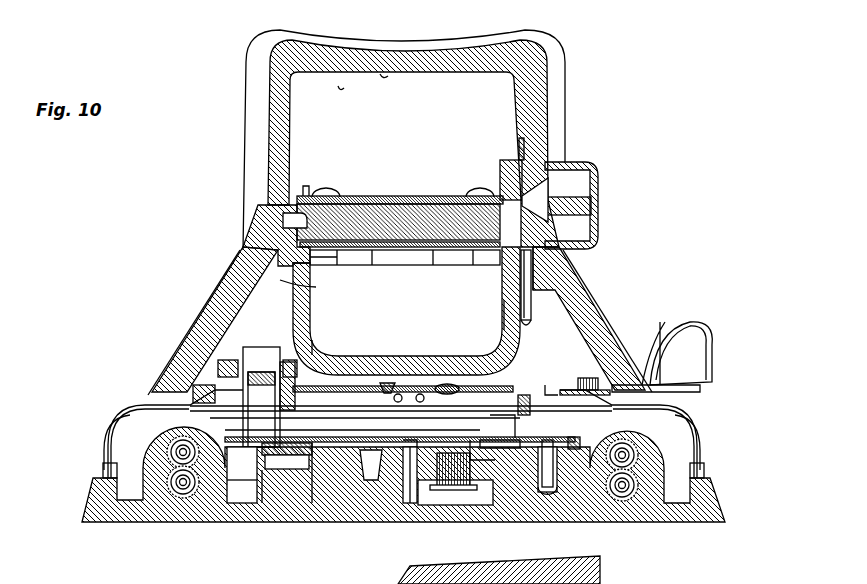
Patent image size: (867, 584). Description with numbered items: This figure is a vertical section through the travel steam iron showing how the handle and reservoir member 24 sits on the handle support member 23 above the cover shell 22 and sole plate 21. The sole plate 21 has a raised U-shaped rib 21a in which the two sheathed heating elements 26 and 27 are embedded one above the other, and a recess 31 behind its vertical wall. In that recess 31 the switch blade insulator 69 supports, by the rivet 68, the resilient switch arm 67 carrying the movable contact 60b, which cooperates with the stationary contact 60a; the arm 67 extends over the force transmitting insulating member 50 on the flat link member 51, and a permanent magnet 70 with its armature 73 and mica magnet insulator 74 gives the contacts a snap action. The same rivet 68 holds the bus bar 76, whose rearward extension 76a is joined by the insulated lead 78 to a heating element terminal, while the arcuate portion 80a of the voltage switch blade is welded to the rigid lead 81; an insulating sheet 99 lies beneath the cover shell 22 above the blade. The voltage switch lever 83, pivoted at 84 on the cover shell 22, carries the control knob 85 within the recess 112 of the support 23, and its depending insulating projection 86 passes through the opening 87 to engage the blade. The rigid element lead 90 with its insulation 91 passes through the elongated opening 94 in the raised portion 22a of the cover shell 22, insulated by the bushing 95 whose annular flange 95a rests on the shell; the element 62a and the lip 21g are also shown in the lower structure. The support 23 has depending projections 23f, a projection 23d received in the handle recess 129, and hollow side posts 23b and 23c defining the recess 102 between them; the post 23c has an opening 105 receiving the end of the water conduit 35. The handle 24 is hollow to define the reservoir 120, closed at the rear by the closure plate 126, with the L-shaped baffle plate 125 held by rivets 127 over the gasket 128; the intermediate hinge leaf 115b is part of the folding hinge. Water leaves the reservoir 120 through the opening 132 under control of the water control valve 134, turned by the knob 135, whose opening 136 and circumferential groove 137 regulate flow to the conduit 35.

The sole plate 21 is at (720, 527).
The raised integral U-shaped rib 21a is at (119, 436).
The base lip 21g is at (105, 464).
The cover shell 22 is at (682, 408).
The raised rear portion of cover shell 22a is at (365, 437).
The handle support member 23 is at (609, 321).
The side post portion 23b is at (222, 296).
The side post portion 23c is at (591, 296).
The projection 23d is at (308, 188).
The depending projections 23f is at (392, 382).
The movable handle and reservoir member 24 is at (563, 58).
The sheathed heating element 26 is at (183, 498).
The sheathed heating element 27 is at (200, 432).
The recess 31 is at (255, 483).
The conduit 35 is at (531, 304).
The force transmitting insulating member 50 is at (450, 490).
The flat link member 51 is at (455, 492).
The stationary contact 60a is at (270, 483).
The movable contact 60b is at (300, 483).
The frame block 62a is at (287, 463).
The resilient switch arm 67 is at (447, 384).
The rivet 68 is at (543, 502).
The switch blade insulator 69 is at (570, 497).
The permanent magnet 70 is at (334, 503).
The armature 73 is at (398, 393).
The magnet insulator 74 is at (410, 483).
The bus bar 76 is at (527, 436).
The rearward extension 76a is at (496, 467).
The insulated lead 78 is at (188, 368).
The arcuate portion 80a is at (548, 390).
The rigid lead 81 is at (571, 440).
The voltage switch lever 83 is at (566, 372).
The pivot 84 is at (640, 378).
The control knob 85 is at (693, 323).
The depending insulating projection 86 is at (551, 381).
The opening 87 is at (505, 395).
The rigid element lead 90 is at (254, 370).
The insulation 91 is at (240, 475).
The elongated opening 94 is at (240, 375).
The insulator bushing 95 is at (306, 348).
The annular flange 95a is at (329, 360).
The insulating sheet 99 is at (421, 393).
The recess 102 is at (502, 318).
The opening 105 is at (520, 283).
The recess 112 is at (645, 380).
The intermediate leaf 115b is at (316, 287).
The reservoir 120 is at (382, 75).
The L-shaped baffle plate 125 is at (388, 197).
The closure plate 126 is at (340, 90).
The rivets 127 is at (330, 190).
The gasket 128 is at (374, 197).
The recess 129 is at (283, 220).
The opening 132 is at (475, 252).
The water control valve 134 is at (550, 196).
The knob 135 is at (593, 170).
The opening 136 is at (511, 170).
The circumferential groove 137 is at (521, 158).